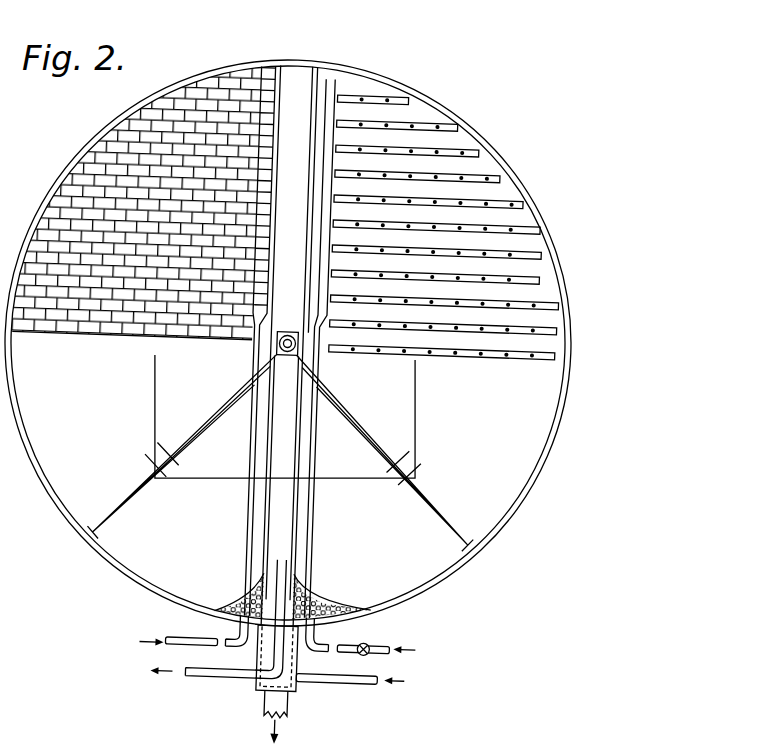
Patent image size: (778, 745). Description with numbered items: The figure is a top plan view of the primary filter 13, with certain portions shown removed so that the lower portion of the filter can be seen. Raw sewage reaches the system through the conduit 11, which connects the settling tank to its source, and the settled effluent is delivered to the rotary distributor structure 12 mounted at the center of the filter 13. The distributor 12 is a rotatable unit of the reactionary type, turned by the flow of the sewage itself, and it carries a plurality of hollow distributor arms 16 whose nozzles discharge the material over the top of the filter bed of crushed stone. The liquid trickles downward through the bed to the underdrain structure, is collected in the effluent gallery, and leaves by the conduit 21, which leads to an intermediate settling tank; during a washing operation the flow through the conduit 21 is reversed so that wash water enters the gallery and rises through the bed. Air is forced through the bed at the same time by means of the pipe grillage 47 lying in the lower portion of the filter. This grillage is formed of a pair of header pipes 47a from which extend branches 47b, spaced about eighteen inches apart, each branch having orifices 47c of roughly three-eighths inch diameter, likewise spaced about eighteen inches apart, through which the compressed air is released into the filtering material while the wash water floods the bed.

The conduit 11 is at (294, 72).
The rotary distributor structure 12 is at (360, 443).
The primary filter 13 is at (389, 83).
The hollow distributor arms 16 is at (194, 643).
The conduit 21 is at (298, 705).
The pipe grillage 47 is at (461, 269).
The header pipes 47a is at (251, 504).
The branches 47b is at (468, 350).
The orifices 47c is at (546, 347).